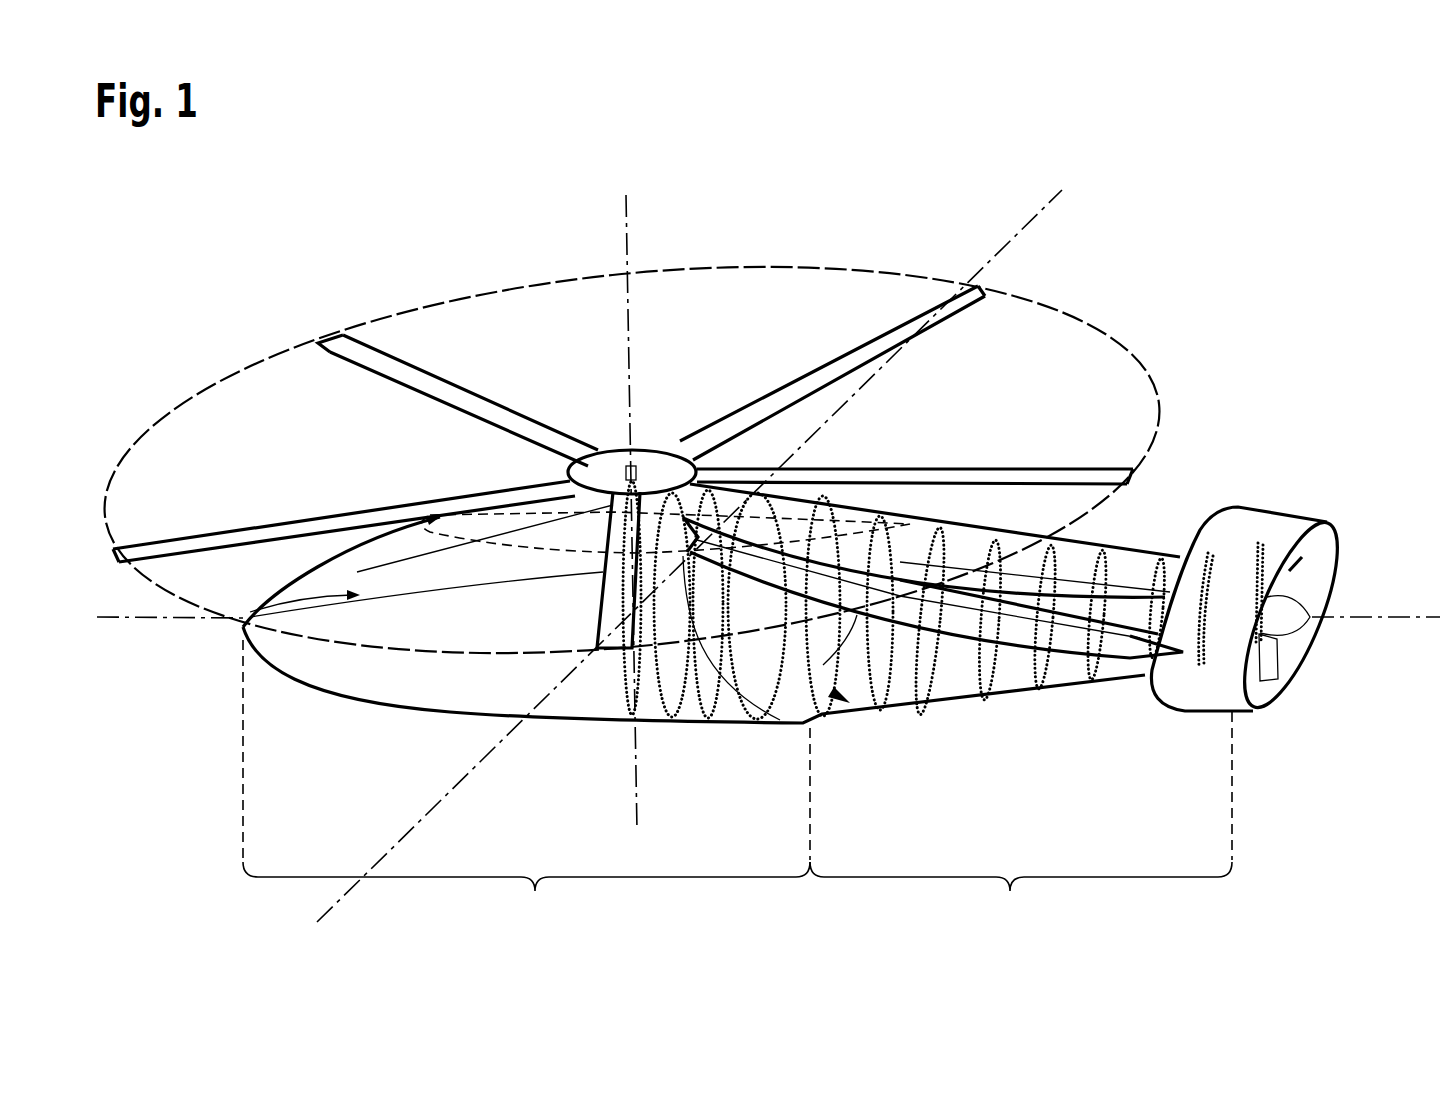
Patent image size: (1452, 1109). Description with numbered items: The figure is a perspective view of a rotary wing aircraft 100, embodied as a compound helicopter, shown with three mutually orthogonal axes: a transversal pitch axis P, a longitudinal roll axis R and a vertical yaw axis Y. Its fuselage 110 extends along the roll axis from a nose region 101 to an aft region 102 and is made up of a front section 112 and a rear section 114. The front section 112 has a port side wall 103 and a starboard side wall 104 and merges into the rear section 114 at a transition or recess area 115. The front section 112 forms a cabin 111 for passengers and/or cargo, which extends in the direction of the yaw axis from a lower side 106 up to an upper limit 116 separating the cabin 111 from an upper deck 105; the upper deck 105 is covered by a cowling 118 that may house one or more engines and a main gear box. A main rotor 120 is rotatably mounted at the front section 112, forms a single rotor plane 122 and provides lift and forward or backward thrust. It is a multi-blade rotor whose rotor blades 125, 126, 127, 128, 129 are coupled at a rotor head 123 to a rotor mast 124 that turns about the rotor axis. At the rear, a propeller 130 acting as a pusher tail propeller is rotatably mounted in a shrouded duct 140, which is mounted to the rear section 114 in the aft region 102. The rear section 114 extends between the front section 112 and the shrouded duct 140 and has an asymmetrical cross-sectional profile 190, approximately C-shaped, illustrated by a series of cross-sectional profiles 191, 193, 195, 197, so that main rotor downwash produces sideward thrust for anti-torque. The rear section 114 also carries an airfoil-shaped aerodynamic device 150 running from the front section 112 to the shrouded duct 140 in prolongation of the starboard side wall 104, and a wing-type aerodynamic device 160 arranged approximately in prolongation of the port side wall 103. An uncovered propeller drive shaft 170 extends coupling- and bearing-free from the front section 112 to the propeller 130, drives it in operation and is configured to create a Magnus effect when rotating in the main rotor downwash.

The rotary wing aircraft 100 is at (215, 235).
The nose region 101 is at (228, 648).
The aft region 102 is at (1344, 590).
The port side wall 103 is at (572, 690).
The starboard side wall 104 is at (864, 502).
The upper deck 105 is at (788, 504).
The lower side 106 is at (300, 692).
The fuselage 110 is at (612, 613).
The cabin 111 is at (243, 627).
The front section 112 is at (526, 784).
The rear section 114 is at (1021, 820).
The transition or recess area 115 is at (762, 618).
The upper limit 116 is at (540, 512).
The cowling 118 is at (740, 500).
The main rotor 120 is at (435, 358).
The rotor plane 122 is at (848, 268).
The rotor head 123 is at (603, 440).
The rotor mast 124 is at (616, 468).
The rotor blade 125 is at (170, 546).
The rotor blade 126 is at (345, 350).
The rotor blade 127 is at (882, 338).
The rotor blade 128 is at (1040, 470).
The rotor blade 129 is at (433, 703).
The propeller 130 is at (1296, 658).
The shrouded duct 140 is at (1287, 530).
The airfoil-shaped aerodynamic device 150 is at (965, 677).
The wing-type aerodynamic device 160 is at (1070, 650).
The uncovered propeller drive shaft 170 is at (1127, 627).
The asymmetrical cross-sectional profile 190 is at (835, 690).
The cross-sectional profile 191 is at (815, 660).
The cross-sectional profile 193 is at (920, 648).
The cross-sectional profile 195 is at (1033, 653).
The cross-sectional profile 197 is at (1144, 655).